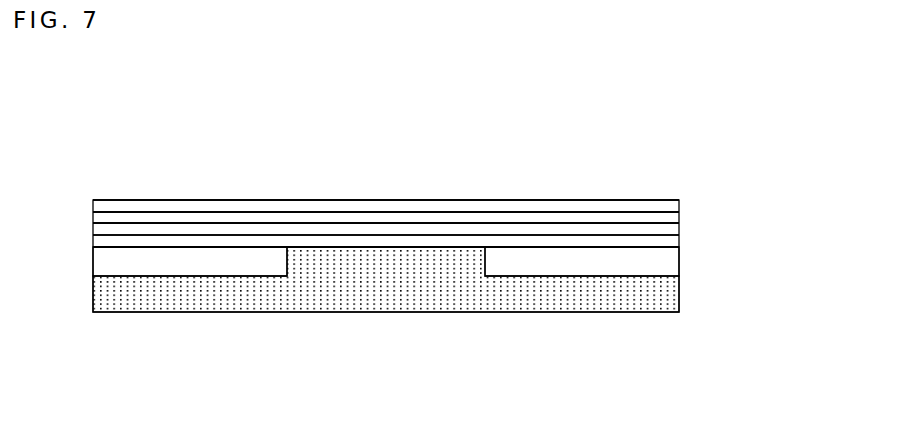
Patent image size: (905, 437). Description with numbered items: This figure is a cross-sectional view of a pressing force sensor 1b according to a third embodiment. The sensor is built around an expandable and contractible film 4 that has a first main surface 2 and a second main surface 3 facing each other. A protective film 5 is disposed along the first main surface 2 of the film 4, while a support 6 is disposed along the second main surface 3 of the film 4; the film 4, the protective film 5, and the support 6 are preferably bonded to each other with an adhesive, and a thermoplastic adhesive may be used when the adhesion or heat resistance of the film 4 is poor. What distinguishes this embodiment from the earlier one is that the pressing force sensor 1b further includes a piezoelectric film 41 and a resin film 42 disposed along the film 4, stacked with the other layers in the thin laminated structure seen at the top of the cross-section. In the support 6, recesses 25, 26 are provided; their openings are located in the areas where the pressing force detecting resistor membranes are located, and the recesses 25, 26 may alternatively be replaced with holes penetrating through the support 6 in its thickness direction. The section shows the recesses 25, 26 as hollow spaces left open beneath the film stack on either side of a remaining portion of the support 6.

The pressing force sensor 1b is at (217, 124).
The first main surface 2 is at (577, 212).
The second main surface 3 is at (547, 223).
The film 4 is at (680, 216).
The piezoelectric film 41 is at (680, 229).
The resin film 42 is at (680, 241).
The protective film 5 is at (680, 204).
The support 6 is at (680, 297).
The recess 25 is at (210, 267).
The recess 26 is at (627, 268).